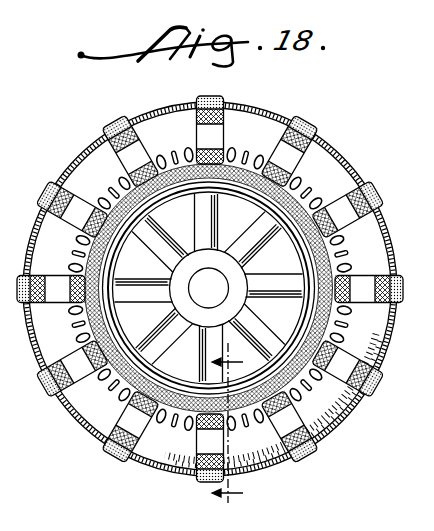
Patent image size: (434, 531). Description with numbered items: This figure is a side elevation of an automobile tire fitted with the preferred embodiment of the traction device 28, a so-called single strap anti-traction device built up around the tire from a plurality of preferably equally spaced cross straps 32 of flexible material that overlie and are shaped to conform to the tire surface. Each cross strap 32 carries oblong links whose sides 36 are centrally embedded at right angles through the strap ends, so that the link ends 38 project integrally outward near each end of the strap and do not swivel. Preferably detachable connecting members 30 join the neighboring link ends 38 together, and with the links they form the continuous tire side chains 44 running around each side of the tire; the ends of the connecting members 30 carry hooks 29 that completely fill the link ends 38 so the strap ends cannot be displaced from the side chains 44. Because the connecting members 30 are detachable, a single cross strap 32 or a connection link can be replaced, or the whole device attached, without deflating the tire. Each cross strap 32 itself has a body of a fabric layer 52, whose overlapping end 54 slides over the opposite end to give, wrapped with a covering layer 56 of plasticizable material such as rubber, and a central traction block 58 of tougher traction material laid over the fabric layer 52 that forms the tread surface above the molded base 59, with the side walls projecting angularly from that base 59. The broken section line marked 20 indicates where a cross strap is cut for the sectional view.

The section line 20 is at (228, 433).
The traction device 28 is at (167, 150).
The hooks 29 is at (347, 230).
The connecting members 30 is at (232, 252).
The cross straps 32 is at (298, 132).
The link side 36 is at (312, 186).
The link ends 38 is at (209, 286).
The tire side chains 44 is at (108, 183).
The fabric layer 52 is at (52, 186).
The overlapping end 54 is at (270, 170).
The covering layer 56 is at (288, 164).
The traction block 58 is at (295, 177).
The molded base 59 is at (297, 120).